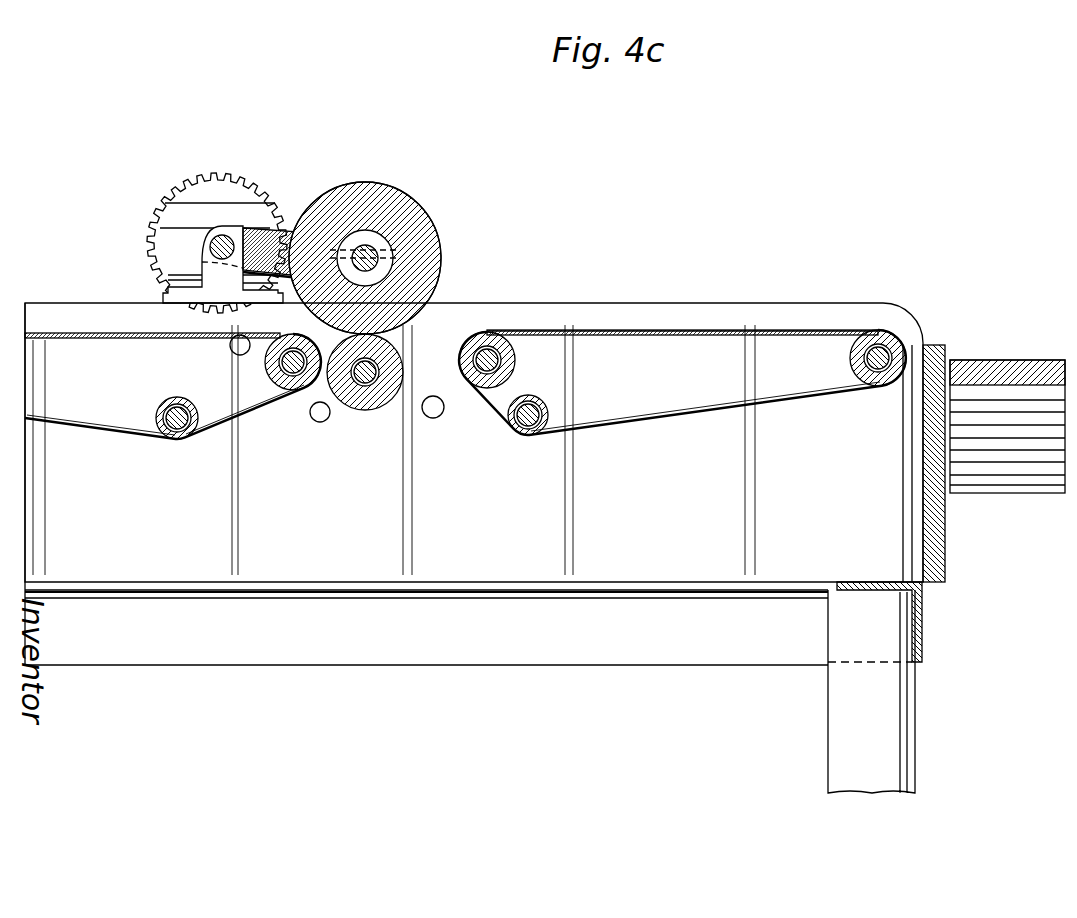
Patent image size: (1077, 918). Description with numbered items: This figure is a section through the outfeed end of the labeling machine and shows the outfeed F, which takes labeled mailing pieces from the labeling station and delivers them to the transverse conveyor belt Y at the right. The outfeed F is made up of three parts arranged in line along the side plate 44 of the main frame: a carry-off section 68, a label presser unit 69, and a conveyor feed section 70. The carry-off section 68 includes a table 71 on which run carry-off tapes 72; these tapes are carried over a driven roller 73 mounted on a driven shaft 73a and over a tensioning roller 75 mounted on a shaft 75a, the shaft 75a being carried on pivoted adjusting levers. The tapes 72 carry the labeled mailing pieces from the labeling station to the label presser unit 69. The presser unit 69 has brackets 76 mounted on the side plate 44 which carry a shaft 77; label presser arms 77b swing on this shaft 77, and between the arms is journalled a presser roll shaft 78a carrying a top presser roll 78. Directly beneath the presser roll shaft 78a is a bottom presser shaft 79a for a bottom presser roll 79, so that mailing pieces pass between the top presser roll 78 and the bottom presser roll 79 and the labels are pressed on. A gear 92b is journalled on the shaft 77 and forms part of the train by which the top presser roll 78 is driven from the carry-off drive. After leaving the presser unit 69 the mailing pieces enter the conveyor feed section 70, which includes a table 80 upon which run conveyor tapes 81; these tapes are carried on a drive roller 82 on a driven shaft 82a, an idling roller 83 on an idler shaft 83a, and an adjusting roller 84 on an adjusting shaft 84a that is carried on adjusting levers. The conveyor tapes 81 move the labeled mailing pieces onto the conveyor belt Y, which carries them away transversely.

The side plate 44 is at (655, 303).
The carry-off section 68 is at (106, 443).
The label presser unit 69 is at (434, 211).
The conveyor feed section 70 is at (679, 440).
The table 71 is at (104, 338).
The carry-off tapes 72 is at (64, 312).
The driven roller 73 is at (280, 384).
The driven shaft 73a is at (293, 350).
The tensioning roller 75 is at (190, 398).
The tensioning roller shaft 75a is at (166, 413).
The brackets 76 is at (165, 270).
The shaft 77 is at (226, 244).
The label presser arm 77b is at (272, 240).
The top presser roll 78 is at (392, 186).
The presser roll shaft 78a is at (380, 257).
The bottom presser roll 79 is at (400, 348).
The bottom presser shaft 79a is at (380, 370).
The table 80 is at (678, 337).
The conveyor tapes 81 is at (742, 330).
The drive roller 82 is at (516, 368).
The driven shaft 82a is at (490, 350).
The idling roller 83 is at (856, 366).
The idler shaft 83a is at (884, 348).
The adjusting roller 84 is at (548, 420).
The adjusting shaft 84a is at (542, 410).
The gear 92b is at (232, 180).
The outfeed F is at (310, 468).
The conveyor belt Y is at (998, 356).